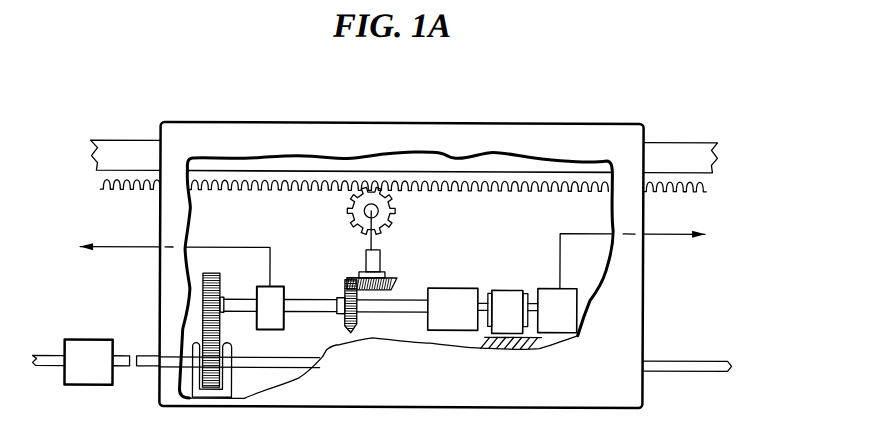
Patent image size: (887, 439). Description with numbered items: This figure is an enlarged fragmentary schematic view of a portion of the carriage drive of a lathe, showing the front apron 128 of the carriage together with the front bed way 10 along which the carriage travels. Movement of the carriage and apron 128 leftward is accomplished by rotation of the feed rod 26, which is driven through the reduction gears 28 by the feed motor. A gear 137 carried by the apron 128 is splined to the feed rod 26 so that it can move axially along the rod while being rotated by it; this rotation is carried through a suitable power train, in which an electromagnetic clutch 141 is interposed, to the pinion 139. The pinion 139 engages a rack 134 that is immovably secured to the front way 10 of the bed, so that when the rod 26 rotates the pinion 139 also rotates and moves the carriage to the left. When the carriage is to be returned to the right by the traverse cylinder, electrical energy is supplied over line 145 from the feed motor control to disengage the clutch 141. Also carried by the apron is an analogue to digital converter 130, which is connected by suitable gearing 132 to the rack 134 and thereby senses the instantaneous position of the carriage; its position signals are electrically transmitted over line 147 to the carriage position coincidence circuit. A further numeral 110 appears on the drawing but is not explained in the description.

The bed ways 10 is at (125, 140).
The feed rod 26 is at (128, 369).
The reduction gears 28 is at (103, 385).
The drive unit 110 is at (311, 436).
The front apron 128 is at (643, 279).
The analogue to digital converter 130 is at (566, 316).
The gearing 132 is at (453, 288).
The rack 134 is at (478, 188).
The gear 137 is at (222, 344).
The pinion 139 is at (390, 213).
The electromagnetic clutch 141 is at (278, 292).
The line 145 is at (114, 247).
The line 147 is at (670, 233).